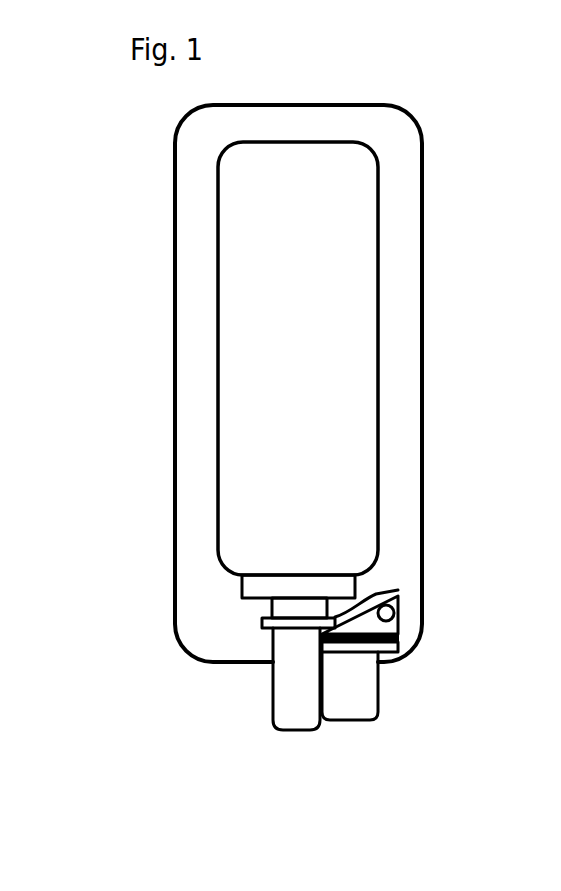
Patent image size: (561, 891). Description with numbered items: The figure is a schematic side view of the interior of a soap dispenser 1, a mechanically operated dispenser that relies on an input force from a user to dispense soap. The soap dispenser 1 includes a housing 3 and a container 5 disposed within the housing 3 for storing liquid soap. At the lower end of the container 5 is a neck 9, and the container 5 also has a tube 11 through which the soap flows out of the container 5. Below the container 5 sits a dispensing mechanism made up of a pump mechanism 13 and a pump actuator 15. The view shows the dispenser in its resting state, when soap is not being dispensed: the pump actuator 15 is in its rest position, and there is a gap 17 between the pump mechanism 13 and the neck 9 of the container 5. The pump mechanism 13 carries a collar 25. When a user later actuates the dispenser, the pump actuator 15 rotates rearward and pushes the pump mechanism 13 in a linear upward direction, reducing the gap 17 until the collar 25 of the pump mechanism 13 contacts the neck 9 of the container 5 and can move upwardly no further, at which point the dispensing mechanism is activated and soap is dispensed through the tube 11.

The soap dispenser 1 is at (262, 383).
The housing 3 is at (422, 174).
The container 5 is at (378, 213).
The neck 9 is at (340, 590).
The tube 11 is at (327, 606).
The pump mechanism 13 is at (248, 635).
The pump actuator 15 is at (390, 672).
The gap 17 is at (262, 627).
The collar 25 is at (262, 628).